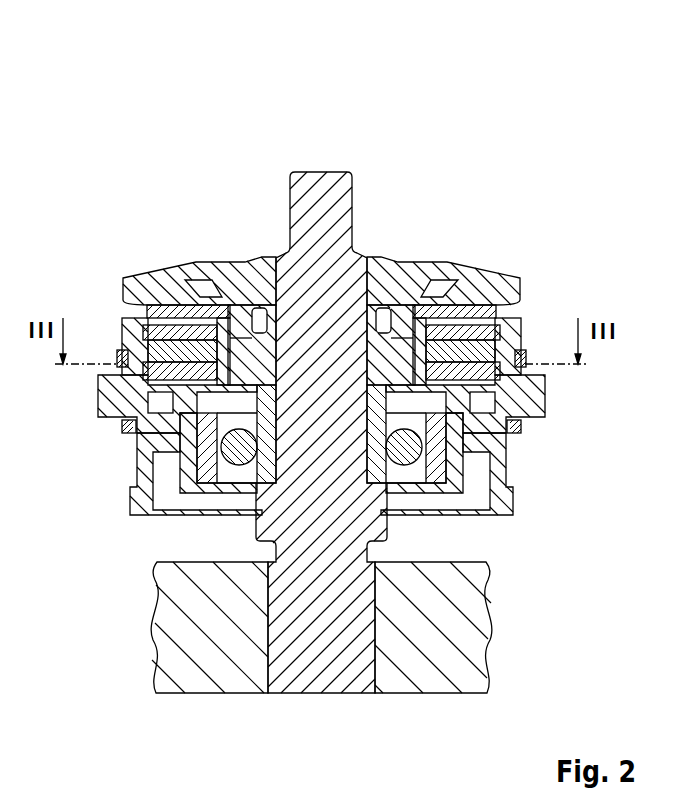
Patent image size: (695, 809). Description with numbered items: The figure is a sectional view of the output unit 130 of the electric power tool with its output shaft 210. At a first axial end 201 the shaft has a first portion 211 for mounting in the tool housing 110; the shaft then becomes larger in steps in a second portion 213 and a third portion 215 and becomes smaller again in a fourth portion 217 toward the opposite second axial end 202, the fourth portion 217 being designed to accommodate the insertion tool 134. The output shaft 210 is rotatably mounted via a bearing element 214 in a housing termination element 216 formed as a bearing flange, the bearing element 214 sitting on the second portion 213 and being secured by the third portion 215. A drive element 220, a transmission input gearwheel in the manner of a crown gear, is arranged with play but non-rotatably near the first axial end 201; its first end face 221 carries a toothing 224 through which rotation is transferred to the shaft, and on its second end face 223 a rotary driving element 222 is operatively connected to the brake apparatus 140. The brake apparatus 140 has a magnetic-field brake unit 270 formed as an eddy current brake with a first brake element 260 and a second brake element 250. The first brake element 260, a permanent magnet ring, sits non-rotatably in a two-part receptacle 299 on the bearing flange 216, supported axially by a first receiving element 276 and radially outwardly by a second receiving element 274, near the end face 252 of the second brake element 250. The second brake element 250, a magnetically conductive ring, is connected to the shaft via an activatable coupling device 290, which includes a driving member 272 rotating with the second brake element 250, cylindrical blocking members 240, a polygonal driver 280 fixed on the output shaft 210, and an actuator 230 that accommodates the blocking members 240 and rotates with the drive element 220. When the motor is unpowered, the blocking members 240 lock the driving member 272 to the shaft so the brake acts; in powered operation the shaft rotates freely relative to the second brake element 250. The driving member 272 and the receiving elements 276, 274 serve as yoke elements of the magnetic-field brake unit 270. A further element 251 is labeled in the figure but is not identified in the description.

The output unit 130 is at (249, 92).
The first axial end 201 is at (320, 163).
The second axial end 202 is at (323, 706).
The output shaft 210 is at (334, 178).
The first portion 211 is at (290, 240).
The second portion 213 is at (387, 256).
The bearing element 214 is at (208, 475).
The third portion 215 is at (265, 522).
The housing termination element 216 is at (145, 469).
The fourth portion 217 is at (378, 665).
The drive element 220 is at (402, 282).
The first end face 221 is at (382, 260).
The rotary driving element 222 is at (435, 330).
The second end face 223 is at (264, 317).
The toothing 224 is at (228, 265).
The actuator 230 is at (497, 293).
The blocking members 240 is at (462, 318).
The second brake element 250 is at (515, 327).
The coil 251 is at (175, 318).
The end face 252 is at (160, 378).
The first brake element 260 is at (543, 392).
The magnetic-field brake unit 270 is at (485, 328).
The driving member 272 is at (513, 490).
The second receiving element 274 is at (527, 343).
The first receiving element 276 is at (508, 400).
The driver 280 is at (403, 452).
The coupling device 290 is at (268, 292).
The receptacle 299 is at (525, 428).
The tool housing 110 is at (136, 282).
The insertion tool 134 is at (207, 678).
The brake apparatus 140 is at (112, 320).